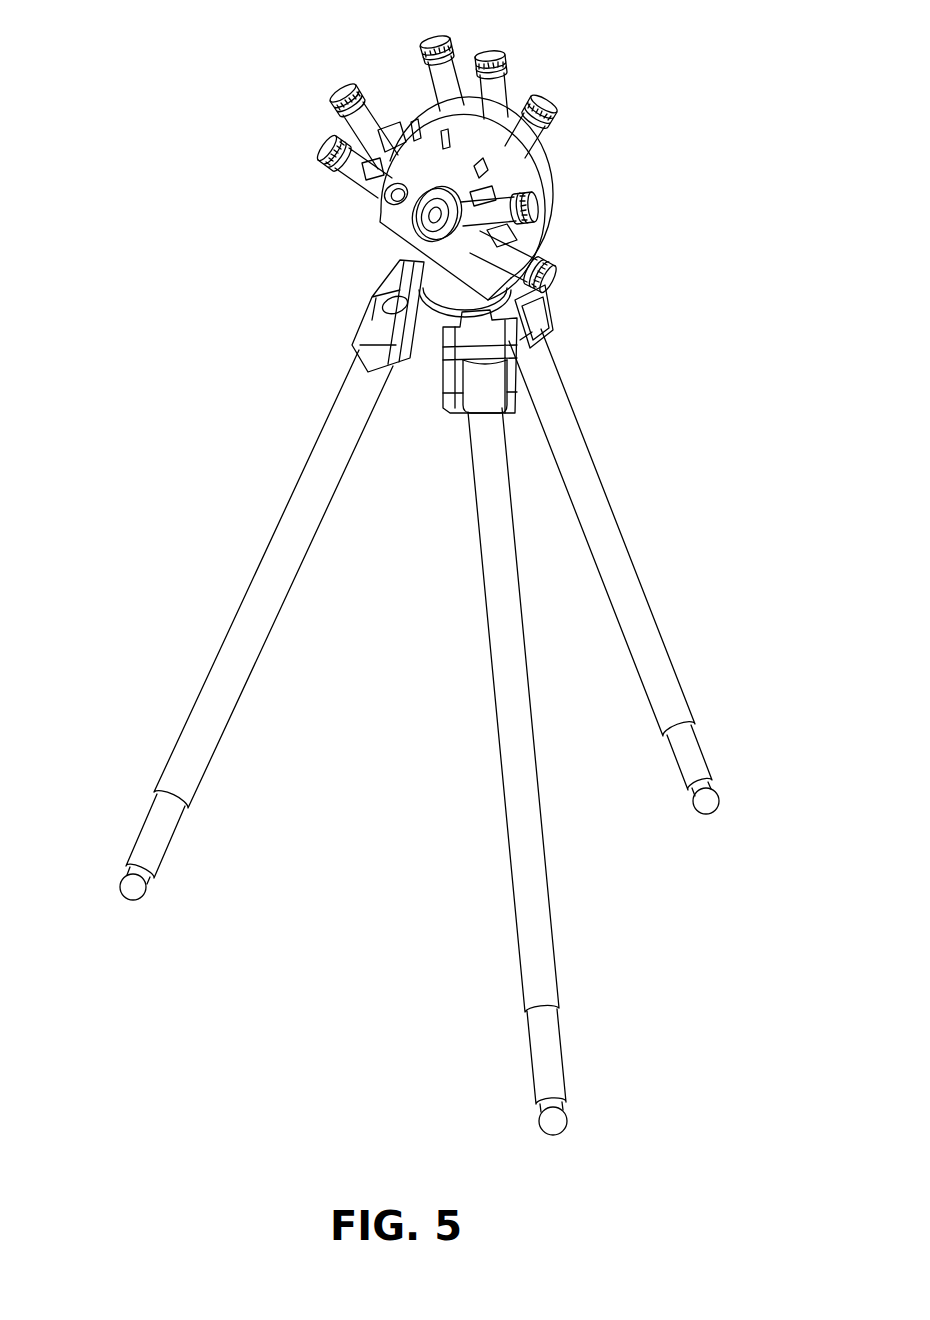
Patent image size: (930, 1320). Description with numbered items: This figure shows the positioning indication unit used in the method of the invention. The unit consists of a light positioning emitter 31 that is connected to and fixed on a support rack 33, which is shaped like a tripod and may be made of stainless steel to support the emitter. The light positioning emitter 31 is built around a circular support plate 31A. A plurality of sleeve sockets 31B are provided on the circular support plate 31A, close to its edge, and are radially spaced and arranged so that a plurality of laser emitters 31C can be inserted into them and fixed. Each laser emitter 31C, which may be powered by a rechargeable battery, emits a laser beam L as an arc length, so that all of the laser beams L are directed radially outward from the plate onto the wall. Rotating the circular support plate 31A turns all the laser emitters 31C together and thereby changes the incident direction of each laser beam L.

The light positioning emitter 31 is at (103, 42).
The circular support plate 31A is at (550, 236).
The sleeve sockets 31B is at (486, 208).
The laser emitters 31C is at (506, 68).
The support rack 33 is at (103, 320).
The laser beam L is at (552, 283).